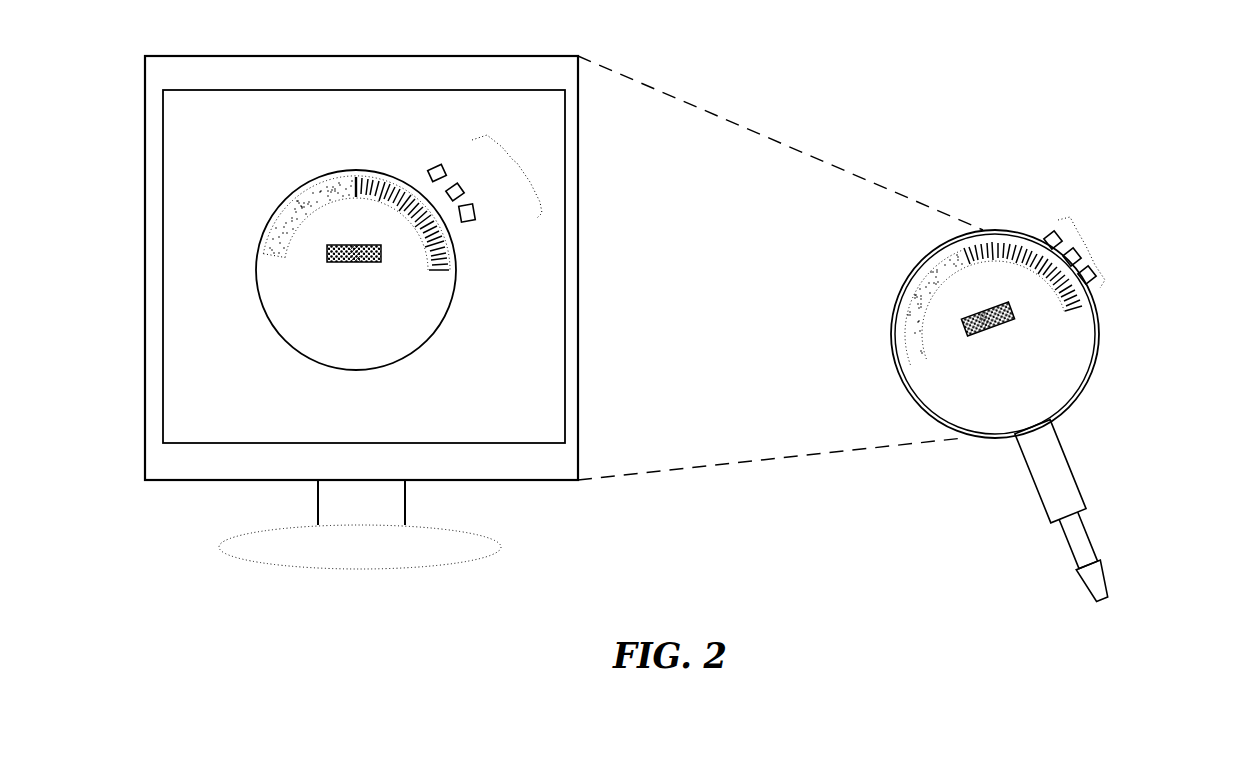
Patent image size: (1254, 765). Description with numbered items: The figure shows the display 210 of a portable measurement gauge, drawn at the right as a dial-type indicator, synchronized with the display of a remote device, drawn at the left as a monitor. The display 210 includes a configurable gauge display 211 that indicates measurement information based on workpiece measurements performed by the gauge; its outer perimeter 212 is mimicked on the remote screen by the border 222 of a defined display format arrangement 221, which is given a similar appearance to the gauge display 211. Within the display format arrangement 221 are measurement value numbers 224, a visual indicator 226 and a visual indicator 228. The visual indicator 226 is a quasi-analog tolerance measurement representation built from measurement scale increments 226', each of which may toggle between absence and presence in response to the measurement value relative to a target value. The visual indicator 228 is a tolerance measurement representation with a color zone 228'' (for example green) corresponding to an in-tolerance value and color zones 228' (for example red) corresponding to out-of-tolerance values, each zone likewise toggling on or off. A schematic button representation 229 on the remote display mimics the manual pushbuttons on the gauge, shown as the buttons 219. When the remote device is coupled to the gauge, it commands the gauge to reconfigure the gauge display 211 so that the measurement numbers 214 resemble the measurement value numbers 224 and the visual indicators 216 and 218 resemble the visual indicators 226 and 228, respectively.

The display 210 is at (1024, 367).
The configurable gauge display 211 is at (1017, 233).
The outer perimeter 212 is at (902, 373).
The measurement numbers 214 is at (972, 383).
The visual indicator 216 is at (1080, 310).
The visual indicator 218 is at (978, 314).
The buttons 219 is at (1091, 237).
The display format arrangement 221 is at (391, 137).
The border 222 is at (337, 170).
The measurement value numbers 224 is at (352, 328).
The visual indicator 226 is at (450, 243).
The measurement scale increments 226' is at (445, 225).
The visual indicator 228 is at (276, 230).
The color zones 228' is at (280, 241).
The color zone 228'' is at (265, 260).
The schematic button representation 229 is at (518, 160).